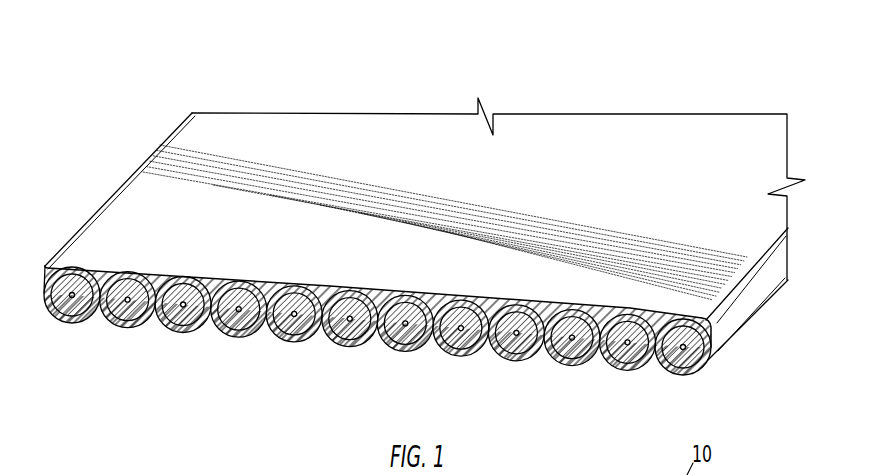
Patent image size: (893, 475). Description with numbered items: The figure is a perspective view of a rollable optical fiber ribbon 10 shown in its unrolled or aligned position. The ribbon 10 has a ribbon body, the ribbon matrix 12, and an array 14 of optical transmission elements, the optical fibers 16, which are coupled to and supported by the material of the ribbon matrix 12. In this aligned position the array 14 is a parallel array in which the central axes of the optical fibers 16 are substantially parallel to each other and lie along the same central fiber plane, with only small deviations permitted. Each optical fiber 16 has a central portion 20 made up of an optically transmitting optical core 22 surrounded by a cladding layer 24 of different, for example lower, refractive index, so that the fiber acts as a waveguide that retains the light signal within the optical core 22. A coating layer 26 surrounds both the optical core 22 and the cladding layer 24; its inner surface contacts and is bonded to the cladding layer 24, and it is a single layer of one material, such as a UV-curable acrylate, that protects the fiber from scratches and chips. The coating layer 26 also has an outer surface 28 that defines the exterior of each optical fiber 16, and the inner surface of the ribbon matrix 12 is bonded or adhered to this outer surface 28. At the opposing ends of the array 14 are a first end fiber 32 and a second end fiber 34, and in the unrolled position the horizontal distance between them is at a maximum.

The optical fiber ribbon 10 is at (207, 55).
The ribbon matrix 12 is at (100, 272).
The array 14 is at (129, 351).
The optical fibers 16 is at (183, 333).
The central portion 20 is at (492, 357).
The optical core 22 is at (527, 377).
The cladding layer 24 is at (533, 360).
The coating layer 26 is at (509, 365).
The outer surface 28 is at (433, 356).
The first end fiber 32 is at (60, 314).
The second end fiber 34 is at (696, 365).